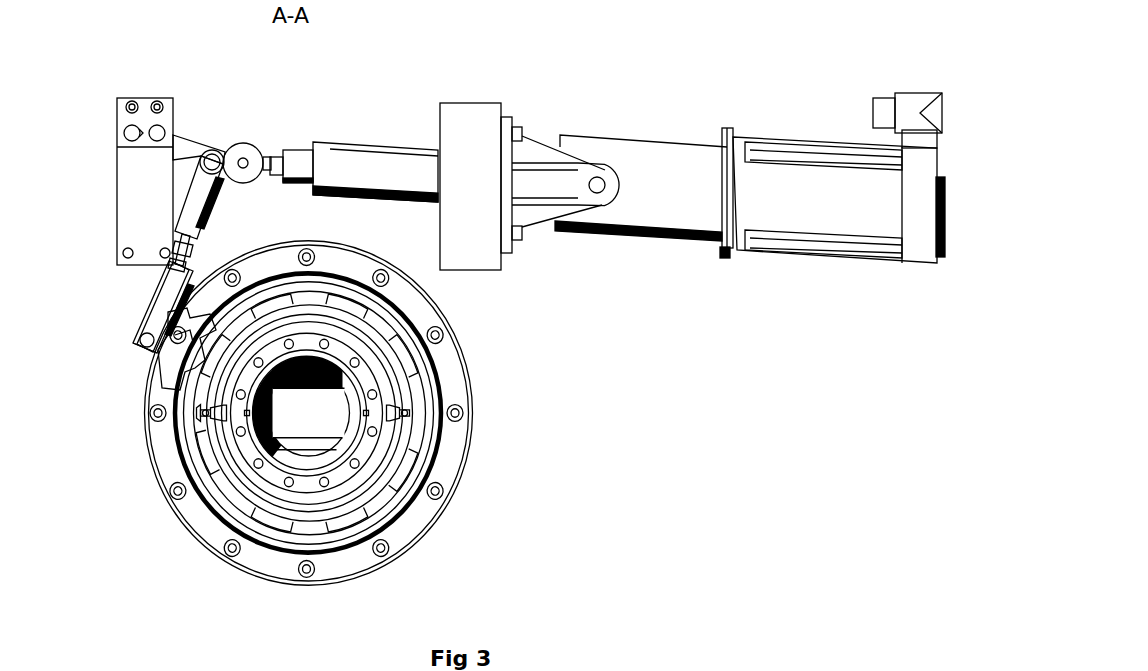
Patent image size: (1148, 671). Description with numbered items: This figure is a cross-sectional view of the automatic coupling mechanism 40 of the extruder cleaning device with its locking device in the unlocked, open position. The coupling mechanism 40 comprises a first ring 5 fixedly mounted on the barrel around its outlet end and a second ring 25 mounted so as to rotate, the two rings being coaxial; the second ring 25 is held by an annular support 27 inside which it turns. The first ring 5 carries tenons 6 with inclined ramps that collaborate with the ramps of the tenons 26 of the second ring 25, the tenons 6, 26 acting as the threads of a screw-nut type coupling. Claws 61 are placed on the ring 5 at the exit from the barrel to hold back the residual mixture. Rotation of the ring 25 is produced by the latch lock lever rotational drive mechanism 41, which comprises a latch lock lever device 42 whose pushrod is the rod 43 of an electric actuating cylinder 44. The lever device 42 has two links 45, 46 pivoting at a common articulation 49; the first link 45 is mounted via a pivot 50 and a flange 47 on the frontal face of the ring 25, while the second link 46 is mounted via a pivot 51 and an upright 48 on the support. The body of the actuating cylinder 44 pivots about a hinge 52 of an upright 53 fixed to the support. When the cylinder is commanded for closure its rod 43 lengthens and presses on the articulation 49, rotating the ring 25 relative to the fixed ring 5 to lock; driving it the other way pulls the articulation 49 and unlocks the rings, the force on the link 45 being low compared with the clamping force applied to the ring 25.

The first ring 5 is at (290, 508).
The tenons 6 is at (263, 522).
The second ring 25 is at (227, 418).
The tenons 26 is at (218, 487).
The annular support 27 is at (422, 532).
The automatic coupling mechanism 40 is at (495, 470).
The latch lock lever rotational drive mechanism 41 is at (385, 103).
The latch lock lever device 42 is at (203, 103).
The rod 43 is at (338, 165).
The electric actuating cylinder 44 is at (688, 155).
The first link 45 is at (155, 313).
The second link 46 is at (177, 146).
The flange 47 is at (160, 368).
The upright 48 is at (132, 104).
The common articulation 49 is at (213, 163).
The pivot 50 is at (132, 347).
The pivot 51 is at (130, 134).
The hinge 52 is at (600, 182).
The upright 53 is at (483, 260).
The claws 61 is at (403, 413).